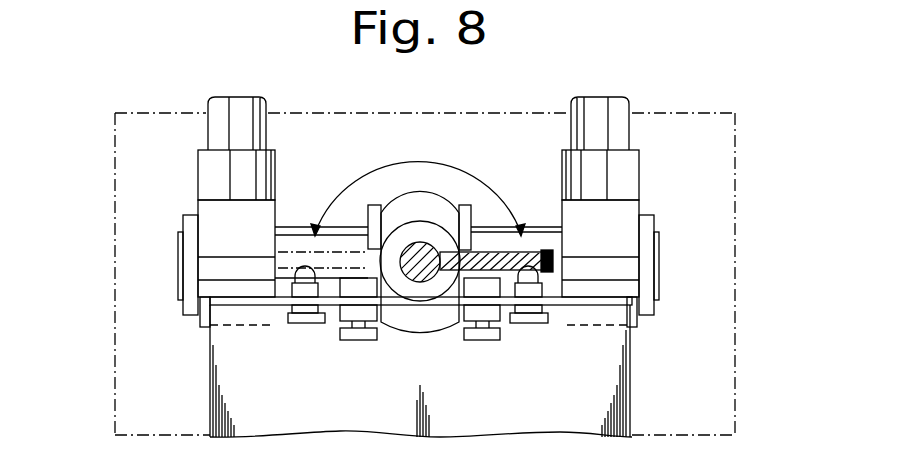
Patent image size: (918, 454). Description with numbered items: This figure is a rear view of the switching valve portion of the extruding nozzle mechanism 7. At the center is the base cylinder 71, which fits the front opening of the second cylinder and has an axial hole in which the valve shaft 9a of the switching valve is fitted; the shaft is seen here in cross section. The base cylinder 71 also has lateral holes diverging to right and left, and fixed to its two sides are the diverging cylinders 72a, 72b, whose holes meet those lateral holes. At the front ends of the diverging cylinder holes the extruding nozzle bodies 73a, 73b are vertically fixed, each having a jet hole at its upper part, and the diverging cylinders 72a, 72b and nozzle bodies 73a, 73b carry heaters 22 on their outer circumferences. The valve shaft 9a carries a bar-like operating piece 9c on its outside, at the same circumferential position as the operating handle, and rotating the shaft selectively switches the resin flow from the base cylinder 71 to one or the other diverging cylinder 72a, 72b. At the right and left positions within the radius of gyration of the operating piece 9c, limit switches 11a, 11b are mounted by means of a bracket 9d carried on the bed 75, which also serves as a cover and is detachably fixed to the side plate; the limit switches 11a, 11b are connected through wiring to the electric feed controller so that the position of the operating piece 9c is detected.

The extruding nozzle mechanism 7 is at (440, 322).
The valve shaft 9a is at (413, 282).
The operating piece 9c is at (537, 262).
The bracket 9d is at (602, 386).
The limit switch 11a is at (302, 310).
The limit switch 11b is at (523, 310).
The heater 22 is at (205, 172).
The base cylinder 71 is at (424, 326).
The diverging cylinder 72a is at (293, 233).
The diverging cylinder 72b is at (550, 225).
The extruding nozzle body 73a is at (222, 123).
The extruding nozzle body 73b is at (605, 123).
The bed 75 is at (747, 228).